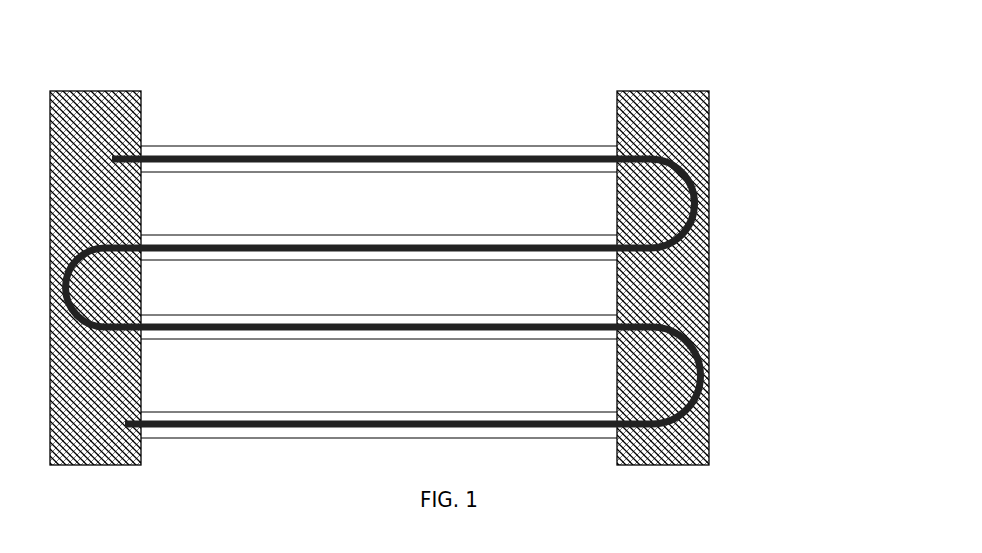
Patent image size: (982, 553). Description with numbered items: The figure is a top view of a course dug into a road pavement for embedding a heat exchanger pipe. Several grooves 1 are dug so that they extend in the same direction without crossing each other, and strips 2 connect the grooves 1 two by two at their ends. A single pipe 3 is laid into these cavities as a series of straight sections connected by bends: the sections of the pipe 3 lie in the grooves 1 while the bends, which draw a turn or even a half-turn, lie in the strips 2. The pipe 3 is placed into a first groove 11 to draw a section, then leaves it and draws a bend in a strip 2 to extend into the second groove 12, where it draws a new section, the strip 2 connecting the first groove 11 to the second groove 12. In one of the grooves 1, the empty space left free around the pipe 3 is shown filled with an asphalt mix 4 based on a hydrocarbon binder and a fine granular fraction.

The groove 1 is at (383, 242).
The strip 2 is at (685, 125).
The pipe 3 is at (487, 156).
The asphalt mix 4 is at (237, 146).
The first groove 11 is at (383, 260).
The second groove 12 is at (392, 339).